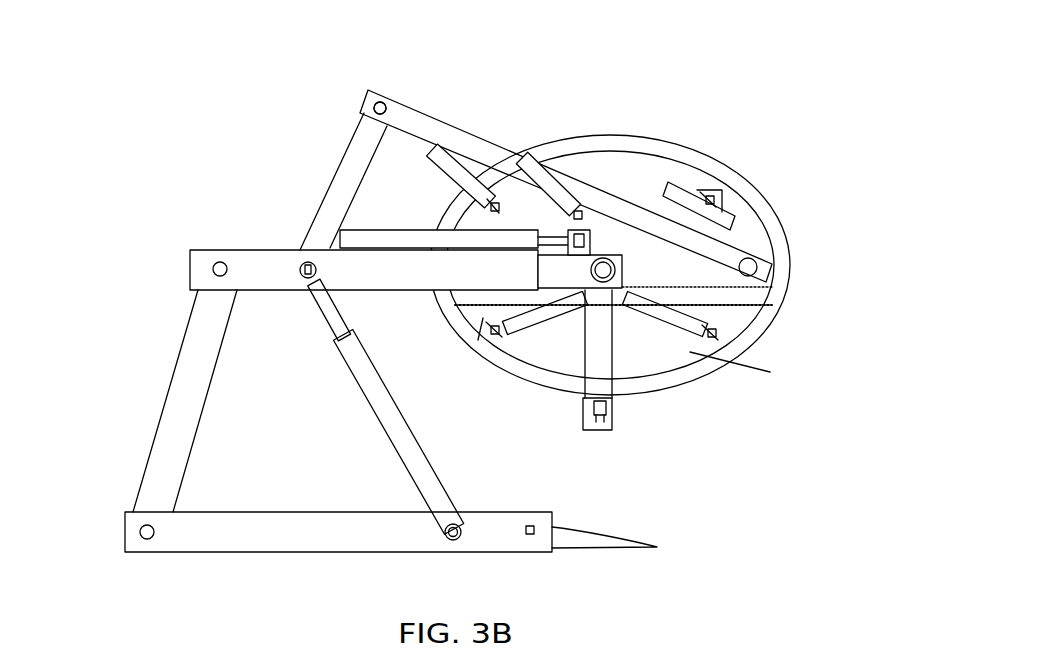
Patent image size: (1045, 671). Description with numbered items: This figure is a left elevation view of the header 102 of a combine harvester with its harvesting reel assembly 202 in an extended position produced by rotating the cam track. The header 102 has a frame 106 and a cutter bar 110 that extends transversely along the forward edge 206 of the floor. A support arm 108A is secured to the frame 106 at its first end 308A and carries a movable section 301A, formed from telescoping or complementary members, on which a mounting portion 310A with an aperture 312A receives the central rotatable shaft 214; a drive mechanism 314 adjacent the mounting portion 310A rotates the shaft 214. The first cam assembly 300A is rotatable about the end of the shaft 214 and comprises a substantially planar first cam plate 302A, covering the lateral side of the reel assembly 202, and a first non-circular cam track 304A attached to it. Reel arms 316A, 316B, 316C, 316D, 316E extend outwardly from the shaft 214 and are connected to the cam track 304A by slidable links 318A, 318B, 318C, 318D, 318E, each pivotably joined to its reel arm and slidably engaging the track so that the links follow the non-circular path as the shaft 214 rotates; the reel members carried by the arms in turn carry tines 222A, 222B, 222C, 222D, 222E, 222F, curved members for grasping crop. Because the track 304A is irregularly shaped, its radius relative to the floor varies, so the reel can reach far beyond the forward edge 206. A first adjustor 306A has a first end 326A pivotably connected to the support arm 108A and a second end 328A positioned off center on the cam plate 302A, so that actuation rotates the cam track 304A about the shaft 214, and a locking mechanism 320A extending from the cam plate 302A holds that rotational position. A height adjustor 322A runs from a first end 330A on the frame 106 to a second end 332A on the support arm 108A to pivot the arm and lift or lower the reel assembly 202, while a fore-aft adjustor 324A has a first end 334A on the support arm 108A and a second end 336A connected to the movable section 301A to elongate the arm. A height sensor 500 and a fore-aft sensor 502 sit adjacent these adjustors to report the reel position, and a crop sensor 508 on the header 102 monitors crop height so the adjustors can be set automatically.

The header 102 is at (148, 86).
The frame 106 is at (125, 552).
The support arm 108A is at (360, 267).
The cutter bar 110 is at (634, 548).
The harvesting reel assembly 202 is at (645, 78).
The forward edge 206 is at (568, 562).
The central rotatable shaft 214 is at (770, 292).
The tine 222A is at (750, 179).
The tine 222B is at (770, 372).
The tine 222C is at (598, 432).
The tine 222D is at (480, 338).
The tine 222E is at (437, 122).
The tine 222F is at (603, 133).
The first cam assembly 300A is at (707, 132).
The movable section 301A is at (578, 395).
The first cam plate 302A is at (707, 150).
The first non-circular cam track 304A is at (790, 263).
The first adjustor 306A is at (440, 121).
The first end 308A is at (183, 282).
The mounting portion 310A is at (625, 355).
The aperture 312A is at (582, 284).
The drive mechanism 314 is at (625, 294).
The reel arm 316A is at (752, 232).
The reel arm 316B is at (695, 375).
The reel arm 316C is at (592, 432).
The reel arm 316D is at (485, 330).
The reel arm 316E is at (510, 170).
The slidable link 318A is at (748, 176).
The slidable link 318B is at (735, 333).
The slidable link 318C is at (607, 430).
The slidable link 318D is at (497, 345).
The slidable link 318E is at (480, 188).
The locking mechanism 320A is at (583, 133).
The height adjustor 322A is at (367, 405).
The fore-aft adjustor 324A is at (358, 210).
The first end 326A is at (352, 106).
The second end 328A is at (768, 276).
The first end 330A is at (432, 546).
The second end 332A is at (306, 300).
The first end 334A is at (323, 238).
The second end 336A is at (527, 267).
The height sensor 500 is at (323, 238).
The fore-aft sensor 502 is at (490, 210).
The crop sensor 508 is at (533, 538).